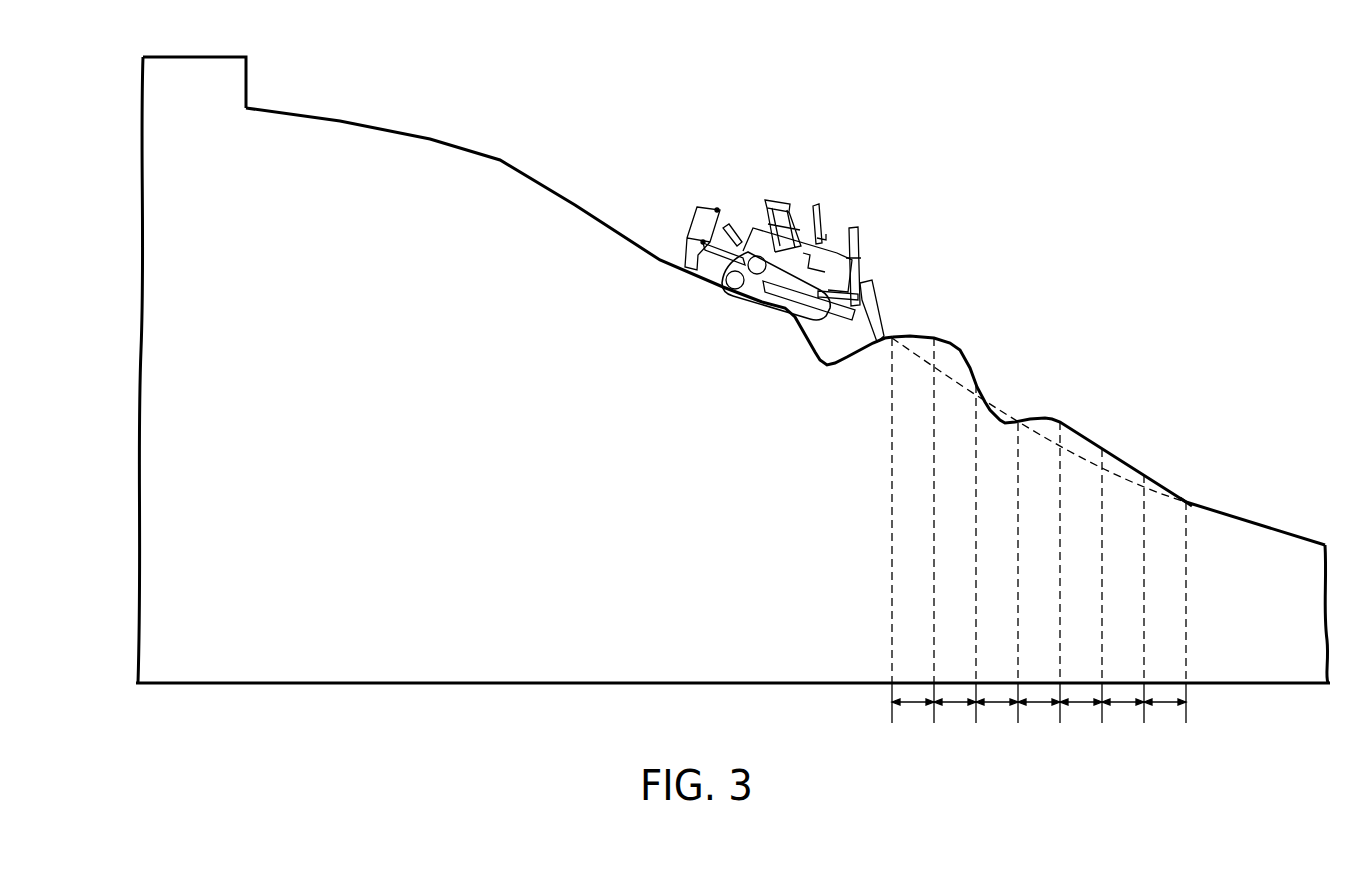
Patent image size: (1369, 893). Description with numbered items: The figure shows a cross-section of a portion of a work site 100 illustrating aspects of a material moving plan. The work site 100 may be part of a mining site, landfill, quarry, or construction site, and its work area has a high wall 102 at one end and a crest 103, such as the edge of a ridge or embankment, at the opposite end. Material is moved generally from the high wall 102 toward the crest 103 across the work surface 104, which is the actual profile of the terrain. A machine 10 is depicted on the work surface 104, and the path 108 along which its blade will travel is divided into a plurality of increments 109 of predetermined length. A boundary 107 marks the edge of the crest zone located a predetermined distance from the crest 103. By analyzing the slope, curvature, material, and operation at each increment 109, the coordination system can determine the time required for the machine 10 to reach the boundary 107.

The work site 100 is at (737, 346).
The high wall 102 is at (246, 83).
The work surface 104 is at (575, 203).
The machine 10 is at (783, 178).
The path 108 is at (1083, 465).
The boundary 107 is at (1187, 500).
The crest 103 is at (1325, 545).
The increments 109 is at (1038, 719).